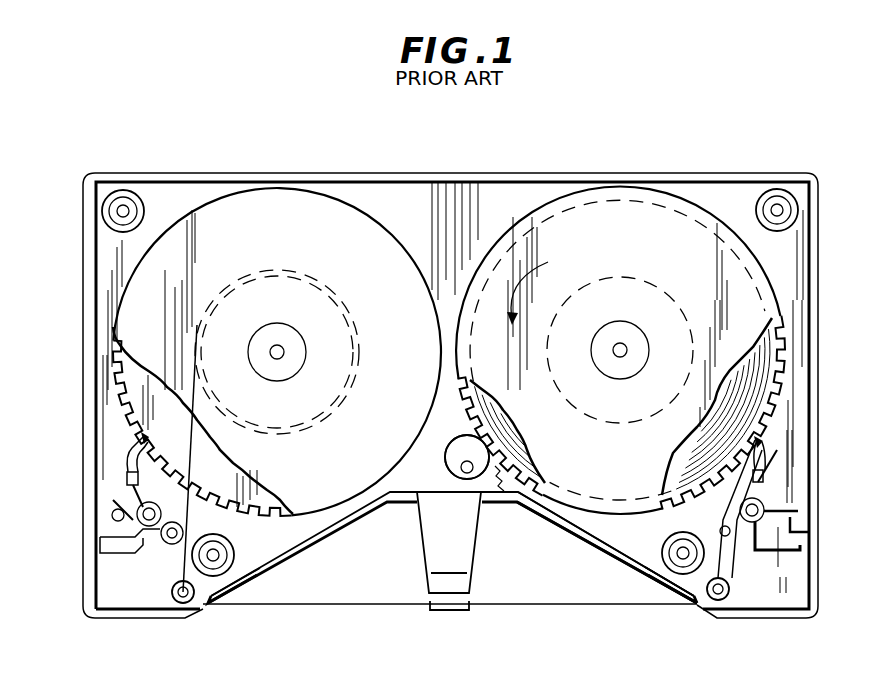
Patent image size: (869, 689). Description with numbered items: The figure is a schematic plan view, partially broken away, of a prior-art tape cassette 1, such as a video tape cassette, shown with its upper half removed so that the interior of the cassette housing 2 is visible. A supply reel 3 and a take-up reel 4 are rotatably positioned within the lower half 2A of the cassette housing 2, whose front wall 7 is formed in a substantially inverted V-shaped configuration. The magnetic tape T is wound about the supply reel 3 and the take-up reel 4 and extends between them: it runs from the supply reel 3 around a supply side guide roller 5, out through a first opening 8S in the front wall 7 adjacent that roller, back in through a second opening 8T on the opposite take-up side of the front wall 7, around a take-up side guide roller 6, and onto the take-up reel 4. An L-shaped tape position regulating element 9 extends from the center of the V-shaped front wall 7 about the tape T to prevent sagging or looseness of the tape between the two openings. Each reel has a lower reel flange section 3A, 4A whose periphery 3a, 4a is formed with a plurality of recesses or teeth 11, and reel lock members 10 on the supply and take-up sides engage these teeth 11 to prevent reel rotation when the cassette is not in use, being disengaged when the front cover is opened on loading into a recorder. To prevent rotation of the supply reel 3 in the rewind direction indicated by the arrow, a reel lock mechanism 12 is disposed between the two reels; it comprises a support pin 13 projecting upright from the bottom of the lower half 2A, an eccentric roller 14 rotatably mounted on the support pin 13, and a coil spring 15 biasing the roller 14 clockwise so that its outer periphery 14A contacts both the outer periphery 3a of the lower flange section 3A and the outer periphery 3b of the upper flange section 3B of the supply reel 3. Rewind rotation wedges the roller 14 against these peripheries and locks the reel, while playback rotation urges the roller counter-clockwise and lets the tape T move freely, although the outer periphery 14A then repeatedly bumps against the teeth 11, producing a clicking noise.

The tape cassette 1 is at (799, 141).
The cassette housing 2 is at (688, 176).
The lower half 2A is at (745, 195).
The supply reel 3 is at (562, 245).
The lower reel flange section 3A is at (788, 352).
The upper flange section 3B is at (732, 268).
The outer periphery of upper flange section 3b is at (782, 296).
The outer periphery of lower flange section 3a is at (770, 438).
The take-up reel 4 is at (318, 212).
The lower reel flange section 4A is at (133, 373).
The periphery 4a is at (118, 407).
The supply side guide roller 5 is at (717, 600).
The take-up side guide roller 6 is at (177, 604).
The front wall 7 is at (600, 560).
The second opening 8T is at (207, 604).
The first opening 8S is at (693, 604).
The L-shaped tape position regulating element 9 is at (448, 566).
The reel lock member 10 is at (137, 530).
The teeth 11 is at (130, 417).
The reel lock mechanism 12 is at (452, 511).
The support pin 13 is at (470, 474).
The eccentric roller 14 is at (448, 462).
The outer periphery of roller 14A is at (452, 445).
The coil spring 15 is at (503, 478).
The magnetic tape T is at (355, 607).